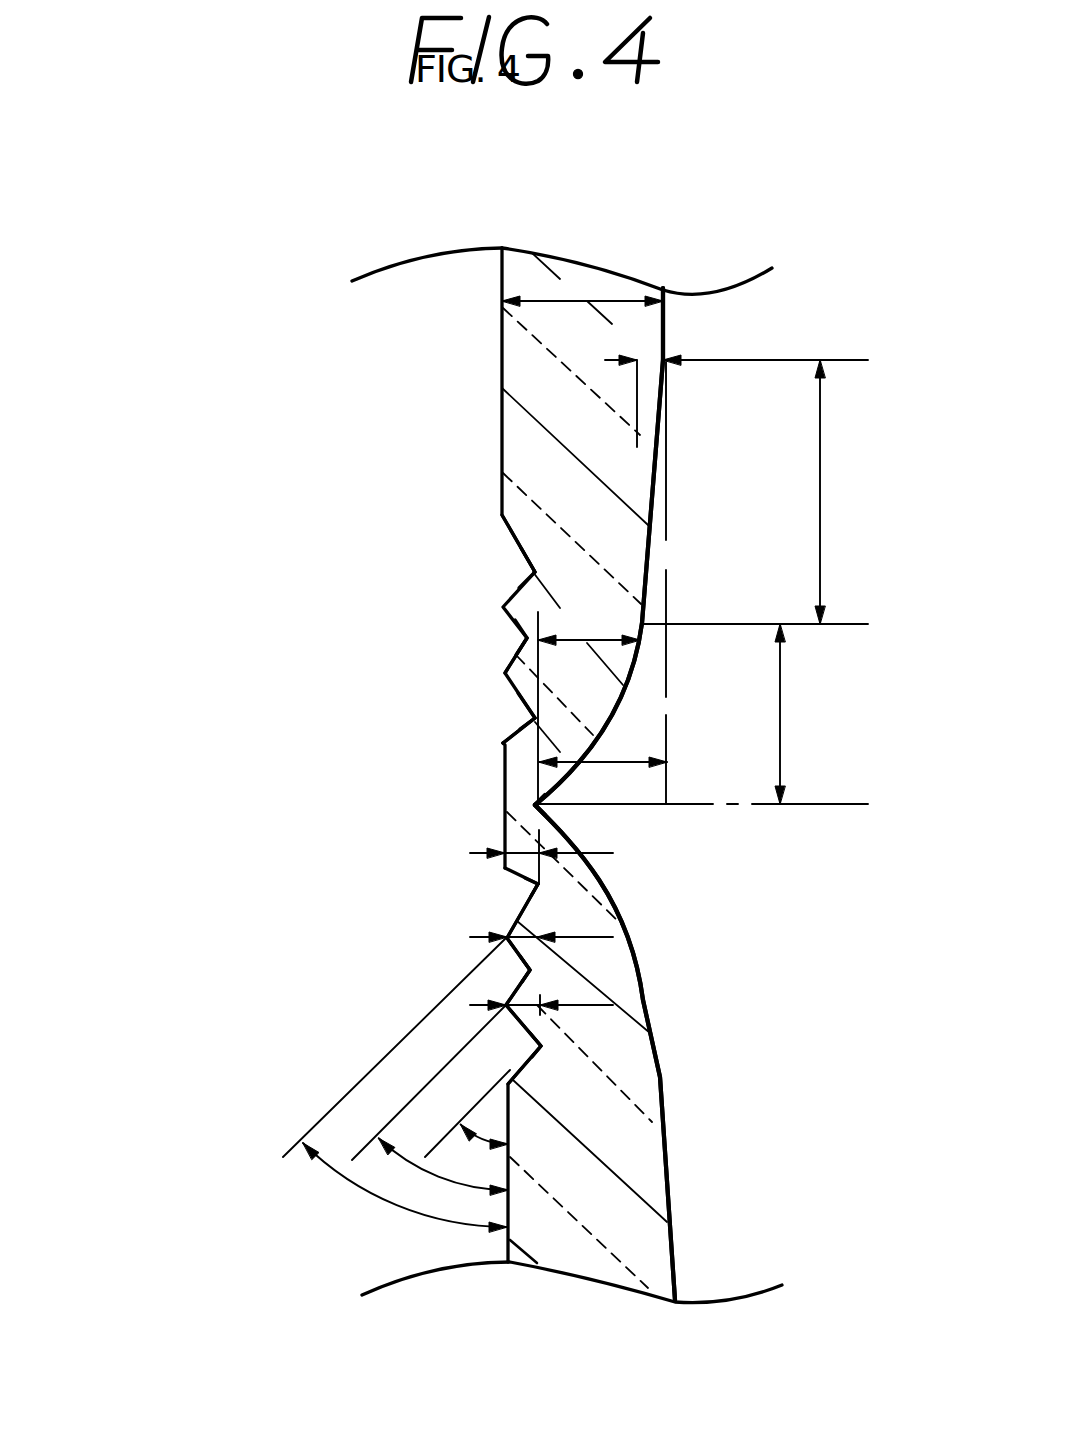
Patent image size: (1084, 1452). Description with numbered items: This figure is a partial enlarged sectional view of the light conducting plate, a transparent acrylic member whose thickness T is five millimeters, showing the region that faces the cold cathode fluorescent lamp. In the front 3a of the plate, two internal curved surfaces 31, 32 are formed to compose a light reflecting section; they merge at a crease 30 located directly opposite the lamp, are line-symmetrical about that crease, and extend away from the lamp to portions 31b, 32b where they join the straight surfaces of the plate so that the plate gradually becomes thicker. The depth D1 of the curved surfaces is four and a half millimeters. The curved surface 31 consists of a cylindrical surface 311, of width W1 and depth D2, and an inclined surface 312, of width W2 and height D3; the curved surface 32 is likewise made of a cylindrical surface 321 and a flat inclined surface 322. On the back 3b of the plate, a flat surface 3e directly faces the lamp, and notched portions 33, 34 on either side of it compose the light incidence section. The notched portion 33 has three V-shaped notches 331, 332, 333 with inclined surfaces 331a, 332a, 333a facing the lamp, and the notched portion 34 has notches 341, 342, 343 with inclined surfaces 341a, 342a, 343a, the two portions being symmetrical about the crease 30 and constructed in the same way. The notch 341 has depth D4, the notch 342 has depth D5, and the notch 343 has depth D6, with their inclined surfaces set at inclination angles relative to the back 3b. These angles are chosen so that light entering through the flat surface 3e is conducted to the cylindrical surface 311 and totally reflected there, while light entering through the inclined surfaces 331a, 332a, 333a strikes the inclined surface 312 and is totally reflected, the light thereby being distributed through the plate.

The front of light conducting plate 3a is at (665, 292).
The back of light conducting plate 3b is at (497, 272).
The flat surface 3e is at (503, 782).
The crease 30 is at (543, 806).
The curved surface 31 is at (650, 558).
The portion of curved surface away from lamp 31b is at (663, 355).
The cylindrical surface 311 is at (610, 706).
The inclined surface 312 is at (657, 434).
The curved surface 32 is at (645, 957).
The cylindrical surface 321 is at (610, 893).
The flat inclined surface 322 is at (660, 1077).
The portion of curved surface away from lamp 32b is at (680, 1263).
The notched portion 33 is at (487, 596).
The notch 331 is at (528, 733).
The inclined surface 331a is at (518, 693).
The notch 332 is at (512, 663).
The inclined surface 332a is at (515, 625).
The notch 333 is at (517, 550).
The inclined surface 333a is at (518, 574).
The notched portion 34 is at (452, 921).
The notch 341 is at (510, 900).
The inclined surface 341a is at (513, 926).
The notch 342 is at (517, 980).
The inclined surface 342a is at (514, 1005).
The notch 343 is at (513, 1043).
The inclined surface 343a is at (513, 1064).
The thickness T is at (582, 287).
The depth of curved surfaces D1 is at (603, 744).
The depth of cylindrical surface D2 is at (589, 701).
The height of inclined surface D3 is at (655, 360).
The depth of notch D4 is at (522, 853).
The depth of notch D5 is at (517, 930).
The depth of notch D6 is at (519, 1005).
The width of cylindrical surface W1 is at (801, 714).
The width of inclined surface W2 is at (757, 492).